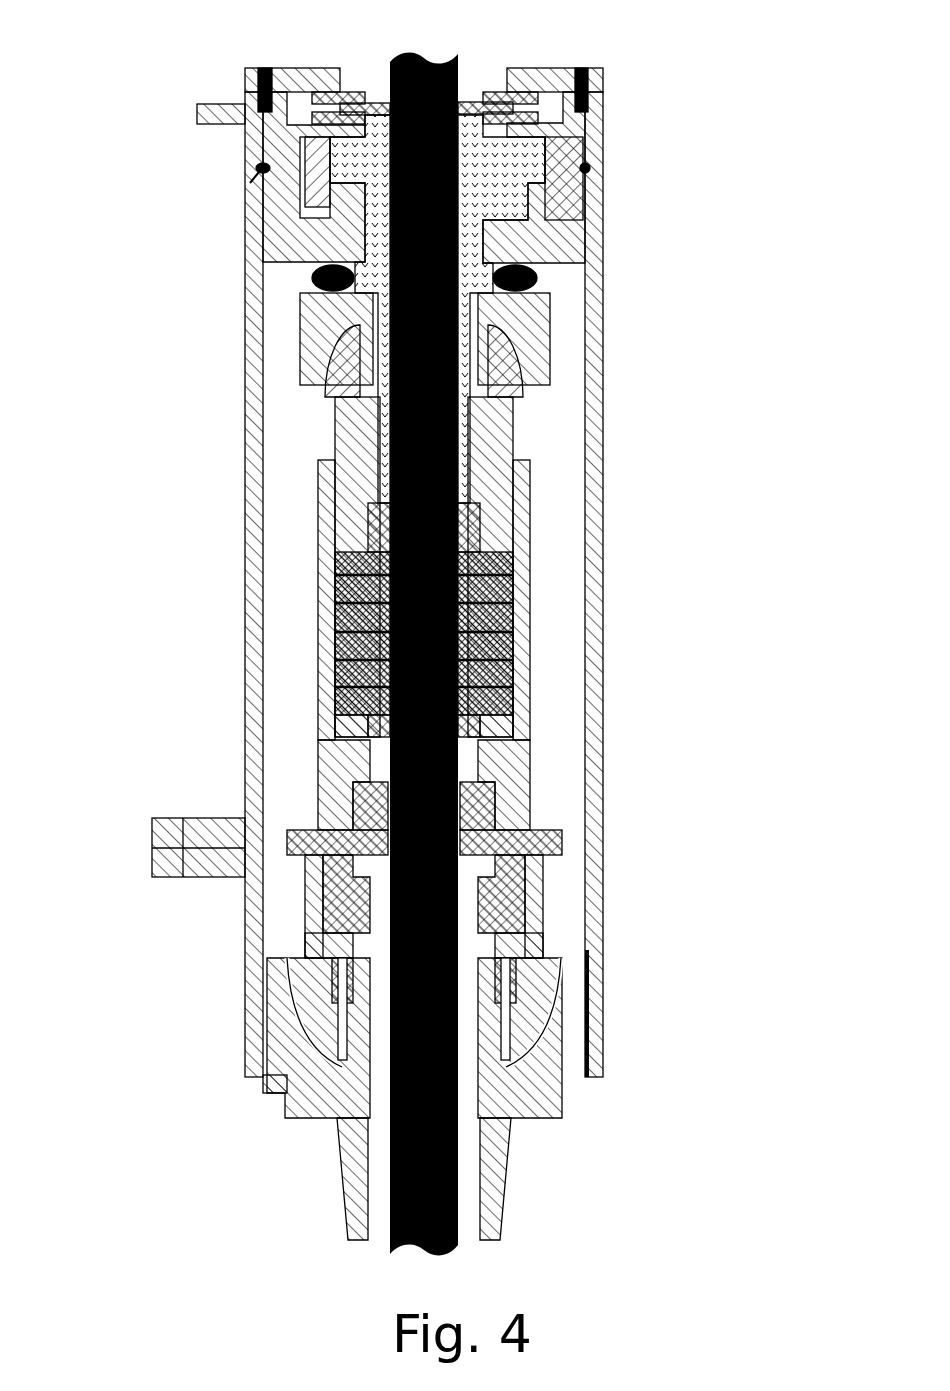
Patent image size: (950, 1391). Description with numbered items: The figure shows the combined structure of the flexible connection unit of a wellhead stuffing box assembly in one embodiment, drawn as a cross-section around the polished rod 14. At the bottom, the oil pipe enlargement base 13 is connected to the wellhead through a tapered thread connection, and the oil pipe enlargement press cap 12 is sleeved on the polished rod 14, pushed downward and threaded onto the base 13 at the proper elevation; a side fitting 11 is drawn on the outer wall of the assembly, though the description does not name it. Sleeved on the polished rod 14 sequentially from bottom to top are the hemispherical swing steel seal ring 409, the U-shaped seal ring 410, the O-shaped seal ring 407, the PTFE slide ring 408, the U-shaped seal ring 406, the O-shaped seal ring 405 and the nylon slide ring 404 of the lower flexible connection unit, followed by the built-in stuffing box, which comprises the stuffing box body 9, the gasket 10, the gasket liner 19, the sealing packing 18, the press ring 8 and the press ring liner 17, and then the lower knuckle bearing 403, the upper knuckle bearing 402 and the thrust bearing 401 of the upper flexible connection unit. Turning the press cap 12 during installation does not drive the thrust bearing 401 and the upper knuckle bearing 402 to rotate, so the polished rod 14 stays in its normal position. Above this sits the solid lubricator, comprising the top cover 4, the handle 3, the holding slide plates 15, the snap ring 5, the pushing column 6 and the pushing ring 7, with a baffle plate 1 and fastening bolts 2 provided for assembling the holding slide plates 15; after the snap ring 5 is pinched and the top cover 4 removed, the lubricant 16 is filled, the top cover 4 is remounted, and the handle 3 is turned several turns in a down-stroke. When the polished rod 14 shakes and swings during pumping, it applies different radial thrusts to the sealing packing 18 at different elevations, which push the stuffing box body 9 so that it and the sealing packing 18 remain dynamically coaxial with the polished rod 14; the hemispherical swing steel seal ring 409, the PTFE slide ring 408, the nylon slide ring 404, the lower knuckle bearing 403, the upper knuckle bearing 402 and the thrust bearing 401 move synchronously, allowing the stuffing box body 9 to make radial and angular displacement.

The baffle plate 1 is at (243, 74).
The fastening bolts 2 is at (252, 96).
The handle 3 is at (216, 125).
The top cover 4 is at (242, 163).
The snap ring 5 is at (260, 170).
The pushing column 6 is at (300, 205).
The pushing ring 7 is at (327, 220).
The press ring 8 is at (328, 426).
The stuffing box body 9 is at (320, 594).
The gasket 10 is at (338, 722).
The connector 11 is at (189, 812).
The oil pipe enlargement press cap 12 is at (250, 987).
The oil pipe enlargement base 13 is at (285, 1093).
The polished rod 14 is at (384, 1244).
The holding slide plates 15 is at (516, 105).
The lubricant 16 is at (540, 172).
The thrust bearing 401 is at (545, 274).
The upper knuckle bearing 402 is at (560, 307).
The lower knuckle bearing 403 is at (512, 377).
The press ring liner 17 is at (478, 530).
The sealing packing 18 is at (488, 630).
The gasket liner 19 is at (478, 718).
The nylon slide ring 404 is at (490, 790).
The O-shaped seal ring 405 is at (488, 817).
The U-shaped seal ring 406 is at (503, 860).
The O-shaped seal ring 407 is at (518, 904).
The PTFE slide ring 408 is at (515, 936).
The hemispherical swing steel seal ring 409 is at (552, 988).
The U-shaped seal ring 410 is at (514, 1005).